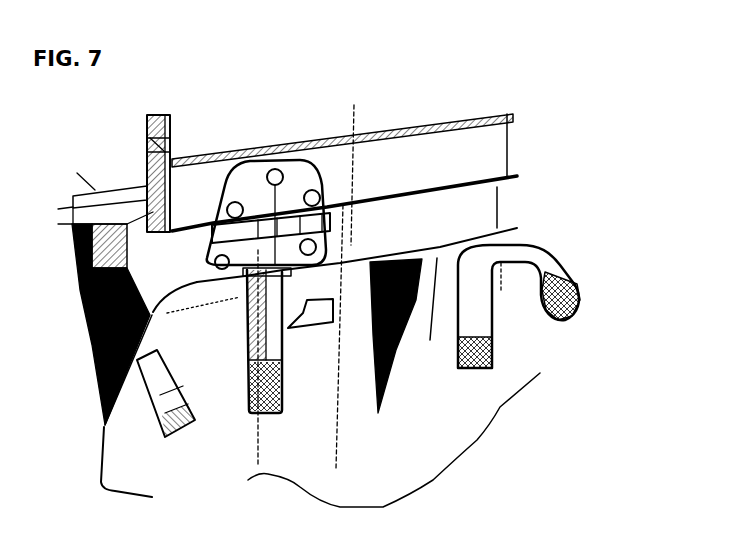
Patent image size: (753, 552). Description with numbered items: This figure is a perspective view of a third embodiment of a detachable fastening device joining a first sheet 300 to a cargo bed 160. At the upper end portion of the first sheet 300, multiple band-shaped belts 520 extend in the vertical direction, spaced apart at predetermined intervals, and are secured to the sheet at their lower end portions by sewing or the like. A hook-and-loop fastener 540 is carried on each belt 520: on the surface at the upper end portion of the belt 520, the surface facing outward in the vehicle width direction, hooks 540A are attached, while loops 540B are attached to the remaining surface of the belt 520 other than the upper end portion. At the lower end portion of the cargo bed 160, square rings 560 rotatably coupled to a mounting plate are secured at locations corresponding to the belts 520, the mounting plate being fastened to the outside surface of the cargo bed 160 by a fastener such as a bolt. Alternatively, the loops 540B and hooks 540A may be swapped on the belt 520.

The cargo bed 160 is at (398, 286).
The first sheet 300 is at (436, 440).
The belt 520 is at (409, 312).
The hook-and-loop fastener 540 is at (595, 306).
The hooks 540A is at (609, 296).
The loops 540B is at (566, 342).
The square ring 560 is at (172, 359).